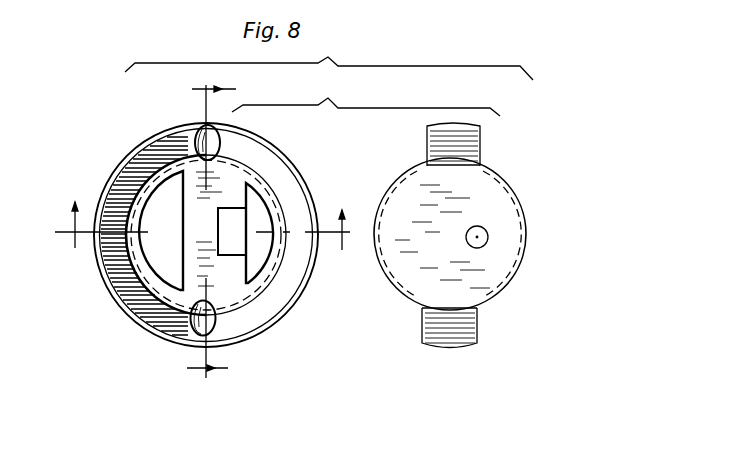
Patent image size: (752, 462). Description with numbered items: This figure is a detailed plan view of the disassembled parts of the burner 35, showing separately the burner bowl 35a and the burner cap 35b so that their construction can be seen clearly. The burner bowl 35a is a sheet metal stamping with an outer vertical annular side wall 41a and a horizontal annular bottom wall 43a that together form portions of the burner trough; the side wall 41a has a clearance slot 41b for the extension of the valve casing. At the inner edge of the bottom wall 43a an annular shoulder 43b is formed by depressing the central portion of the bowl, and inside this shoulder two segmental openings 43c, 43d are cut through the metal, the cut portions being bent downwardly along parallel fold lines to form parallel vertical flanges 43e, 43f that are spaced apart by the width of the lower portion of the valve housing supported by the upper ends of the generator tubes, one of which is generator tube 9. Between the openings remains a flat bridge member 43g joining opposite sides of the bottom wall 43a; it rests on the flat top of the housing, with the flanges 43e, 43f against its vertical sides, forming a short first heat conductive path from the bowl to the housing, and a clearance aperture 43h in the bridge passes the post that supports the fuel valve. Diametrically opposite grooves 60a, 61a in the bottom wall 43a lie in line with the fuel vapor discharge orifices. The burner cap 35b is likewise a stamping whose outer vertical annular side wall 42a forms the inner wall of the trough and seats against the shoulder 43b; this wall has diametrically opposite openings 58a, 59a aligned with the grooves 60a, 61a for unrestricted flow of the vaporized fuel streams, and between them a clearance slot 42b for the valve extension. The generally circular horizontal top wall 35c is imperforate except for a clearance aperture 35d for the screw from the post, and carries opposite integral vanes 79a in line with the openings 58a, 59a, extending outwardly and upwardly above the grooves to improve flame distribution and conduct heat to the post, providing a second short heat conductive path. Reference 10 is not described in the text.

The generator tube 9 is at (203, 226).
The section line 10- 10 is at (208, 232).
The burner 35 is at (329, 78).
The burner bowl 35a is at (289, 153).
The burner cap 35b is at (503, 179).
The top wall 35c is at (500, 200).
The clearance aperture 35d is at (488, 236).
The side wall 41a is at (178, 247).
The clearance slot 41b is at (316, 218).
The side wall 42a is at (393, 282).
The clearance slot 42b is at (526, 243).
The bottom wall 43a is at (128, 172).
The annular shoulder 43b is at (177, 303).
The segmental opening 43c is at (153, 241).
The segmental opening 43d is at (260, 262).
The vertical flange 43e is at (157, 283).
The vertical flange 43f is at (268, 283).
The bridge member 43g is at (228, 166).
The clearance aperture 43h is at (228, 243).
The opening 58a is at (485, 165).
The opening 59a is at (500, 296).
The groove 60a is at (196, 141).
The groove 61a is at (205, 318).
The vane 79a is at (470, 321).